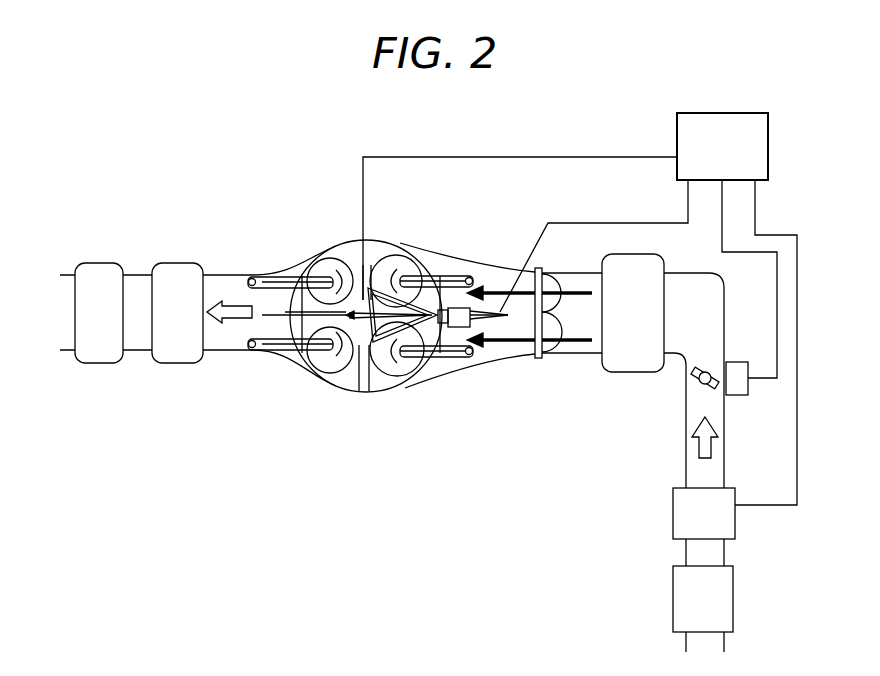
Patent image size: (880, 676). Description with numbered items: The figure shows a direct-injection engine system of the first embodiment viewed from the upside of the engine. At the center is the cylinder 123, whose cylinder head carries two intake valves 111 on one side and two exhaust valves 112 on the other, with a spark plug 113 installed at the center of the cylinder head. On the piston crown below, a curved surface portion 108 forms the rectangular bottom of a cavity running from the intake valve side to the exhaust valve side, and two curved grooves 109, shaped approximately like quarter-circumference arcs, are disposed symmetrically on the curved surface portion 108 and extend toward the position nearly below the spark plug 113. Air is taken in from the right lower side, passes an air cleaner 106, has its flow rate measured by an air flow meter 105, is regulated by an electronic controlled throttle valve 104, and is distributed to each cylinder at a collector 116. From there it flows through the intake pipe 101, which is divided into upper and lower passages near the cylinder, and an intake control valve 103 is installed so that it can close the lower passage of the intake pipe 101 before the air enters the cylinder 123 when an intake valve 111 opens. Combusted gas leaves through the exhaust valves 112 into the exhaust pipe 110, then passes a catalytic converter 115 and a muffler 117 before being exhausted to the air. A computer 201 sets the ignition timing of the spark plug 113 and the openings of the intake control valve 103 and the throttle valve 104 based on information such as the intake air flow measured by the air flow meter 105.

The intake pipe 101 is at (573, 325).
The intake control valve 103 is at (545, 272).
The electronic controlled throttle valve 104 is at (735, 395).
The air flow meter 105 is at (728, 527).
The air cleaner 106 is at (728, 603).
The curved surface portion 108 is at (360, 355).
The curved groove 109 is at (358, 280).
The exhaust pipe 110 is at (228, 280).
The intake valve 111 is at (448, 268).
The exhaust valve 112 is at (277, 280).
The spark plug 113 is at (373, 280).
The catalytic converter 115 is at (174, 357).
The collector 116 is at (637, 360).
The muffler 117 is at (98, 357).
The cylinder 123 is at (397, 241).
The computer 201 is at (768, 147).